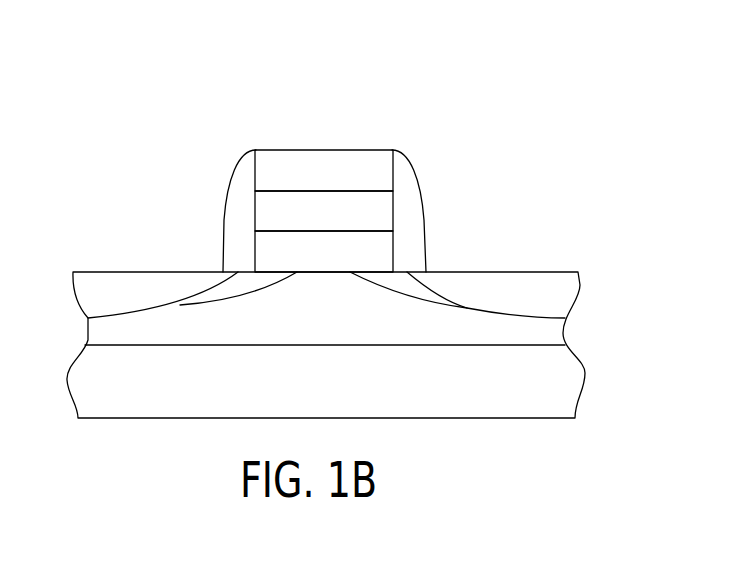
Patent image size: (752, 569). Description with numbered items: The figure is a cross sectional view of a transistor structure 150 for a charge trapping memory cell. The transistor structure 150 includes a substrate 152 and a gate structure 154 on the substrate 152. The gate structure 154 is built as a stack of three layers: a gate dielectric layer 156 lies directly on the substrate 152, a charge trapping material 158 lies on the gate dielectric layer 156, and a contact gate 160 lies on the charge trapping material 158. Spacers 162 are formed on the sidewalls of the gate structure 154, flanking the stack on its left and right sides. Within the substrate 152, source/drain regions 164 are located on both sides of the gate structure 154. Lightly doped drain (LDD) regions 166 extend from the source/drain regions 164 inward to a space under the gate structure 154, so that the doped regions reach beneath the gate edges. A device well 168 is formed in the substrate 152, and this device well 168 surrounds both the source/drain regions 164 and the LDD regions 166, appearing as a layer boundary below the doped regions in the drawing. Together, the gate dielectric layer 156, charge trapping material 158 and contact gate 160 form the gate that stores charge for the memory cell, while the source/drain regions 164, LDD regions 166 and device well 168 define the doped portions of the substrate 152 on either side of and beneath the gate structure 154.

The transistor structure 150 is at (605, 77).
The substrate 152 is at (577, 372).
The gate structure 154 is at (329, 110).
The gate dielectric layer 156 is at (390, 254).
The charge trapping material 158 is at (390, 216).
The contact gate 160 is at (390, 173).
The spacers 162 is at (230, 228).
The source/drain regions 164 is at (82, 297).
The lightly doped drain (LDD) regions 166 is at (233, 295).
The device well 168 is at (555, 337).